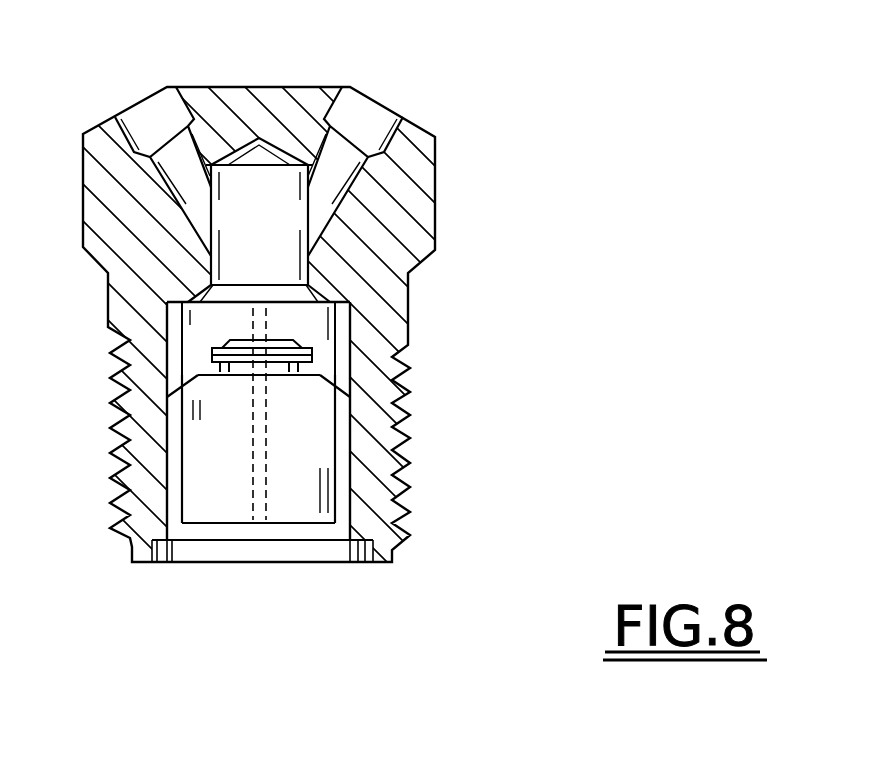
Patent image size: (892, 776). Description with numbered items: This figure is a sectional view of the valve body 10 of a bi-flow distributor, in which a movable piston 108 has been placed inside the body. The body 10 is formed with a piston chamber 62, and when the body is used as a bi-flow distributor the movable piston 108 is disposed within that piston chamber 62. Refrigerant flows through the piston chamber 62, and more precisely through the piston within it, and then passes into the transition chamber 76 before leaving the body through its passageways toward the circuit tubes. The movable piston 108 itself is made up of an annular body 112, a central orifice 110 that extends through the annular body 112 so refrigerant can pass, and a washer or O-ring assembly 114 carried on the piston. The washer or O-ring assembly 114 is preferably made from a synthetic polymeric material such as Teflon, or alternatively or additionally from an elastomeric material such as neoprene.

The body 10 is at (533, 380).
The piston chamber 62 is at (352, 330).
The transition chamber 76 is at (277, 263).
The movable piston 108 is at (310, 457).
The central orifice 110 is at (322, 424).
The annular body 112 is at (207, 472).
The washer or O-ring assembly 114 is at (198, 344).